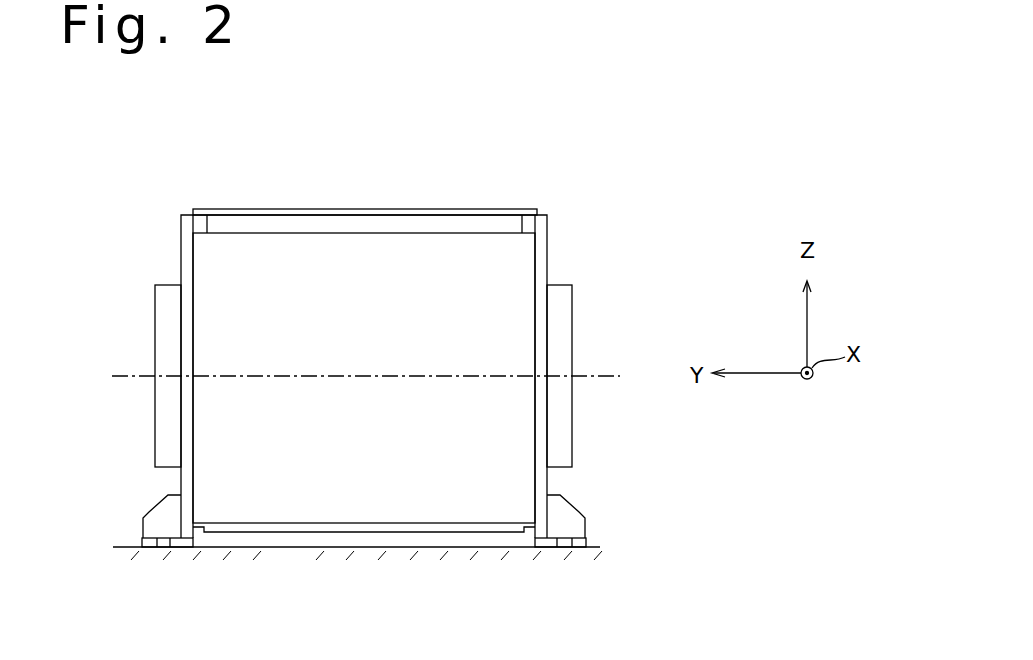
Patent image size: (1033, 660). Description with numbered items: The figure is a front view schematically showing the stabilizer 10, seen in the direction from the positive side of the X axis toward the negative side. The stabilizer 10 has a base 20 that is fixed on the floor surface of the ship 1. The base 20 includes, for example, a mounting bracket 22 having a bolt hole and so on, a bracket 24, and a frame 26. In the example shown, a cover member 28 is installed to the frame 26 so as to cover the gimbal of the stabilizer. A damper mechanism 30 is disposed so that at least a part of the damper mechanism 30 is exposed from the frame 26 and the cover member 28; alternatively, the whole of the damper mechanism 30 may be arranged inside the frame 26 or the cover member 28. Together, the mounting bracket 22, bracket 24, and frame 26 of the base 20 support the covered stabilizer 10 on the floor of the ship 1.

The ship 1 is at (592, 577).
The stabilizer 10 is at (213, 148).
The base 20 is at (655, 463).
The mounting bracket 22 is at (580, 538).
The bracket 24 is at (567, 522).
The frame 26 is at (533, 522).
The cover member 28 is at (370, 252).
The damper mechanism 30 is at (165, 300).